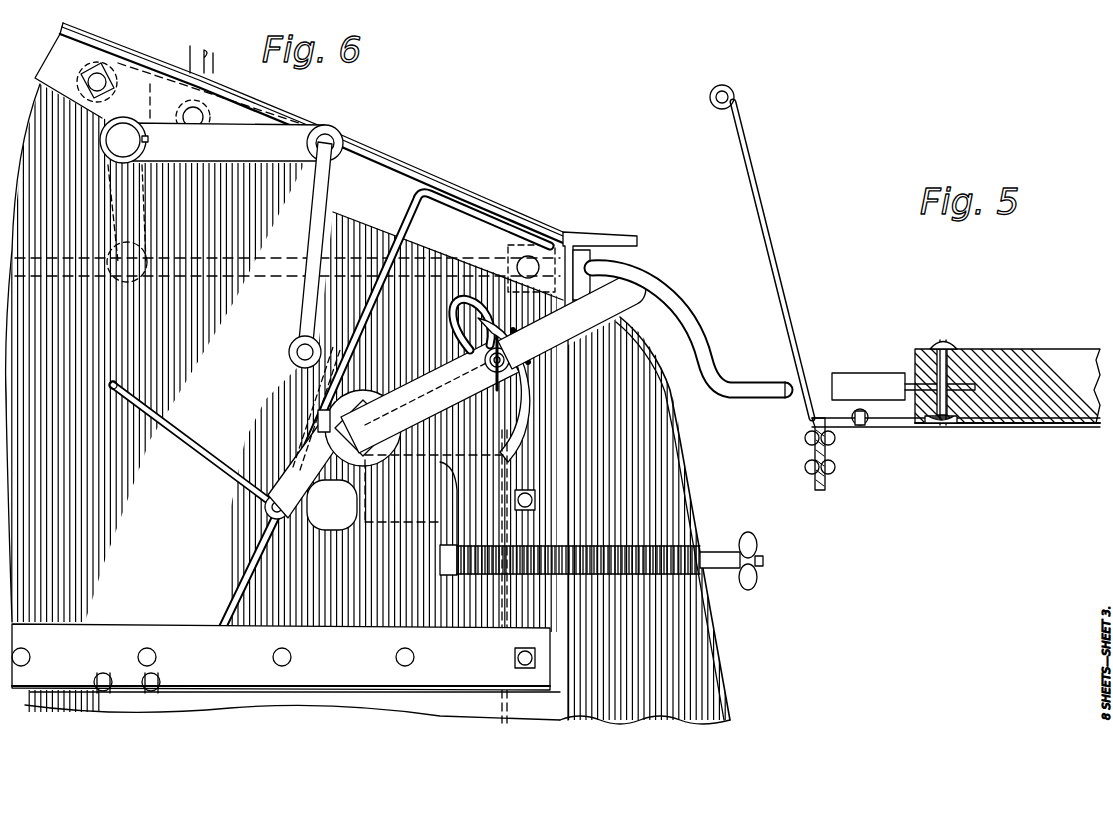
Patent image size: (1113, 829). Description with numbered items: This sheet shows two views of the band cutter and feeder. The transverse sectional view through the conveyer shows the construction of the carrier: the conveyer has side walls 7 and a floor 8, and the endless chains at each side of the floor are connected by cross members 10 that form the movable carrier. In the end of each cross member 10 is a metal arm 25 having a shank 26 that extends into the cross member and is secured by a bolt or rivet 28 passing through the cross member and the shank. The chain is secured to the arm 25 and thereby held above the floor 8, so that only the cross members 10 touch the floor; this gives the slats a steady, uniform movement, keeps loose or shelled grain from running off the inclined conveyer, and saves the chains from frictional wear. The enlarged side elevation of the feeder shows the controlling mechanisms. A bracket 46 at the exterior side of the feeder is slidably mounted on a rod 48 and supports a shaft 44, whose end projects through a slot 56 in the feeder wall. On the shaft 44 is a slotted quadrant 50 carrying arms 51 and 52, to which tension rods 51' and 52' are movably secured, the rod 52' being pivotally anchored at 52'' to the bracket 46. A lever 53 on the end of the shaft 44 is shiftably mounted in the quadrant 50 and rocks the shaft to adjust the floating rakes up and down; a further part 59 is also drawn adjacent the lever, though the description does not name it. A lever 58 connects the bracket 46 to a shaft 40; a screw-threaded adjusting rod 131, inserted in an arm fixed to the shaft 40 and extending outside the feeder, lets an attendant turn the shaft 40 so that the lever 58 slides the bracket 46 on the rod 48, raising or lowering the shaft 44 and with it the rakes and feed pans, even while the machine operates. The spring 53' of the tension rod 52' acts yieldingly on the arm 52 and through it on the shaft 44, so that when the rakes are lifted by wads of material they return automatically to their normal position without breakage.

In FIG. 5, the side wall 7 is at (776, 262).
In FIG. 5, the floor 8 is at (991, 428).
In FIG. 5, the cross member 10 is at (1060, 415).
In FIG. 5, the arm 25 is at (858, 373).
In FIG. 5, the shank 26 is at (920, 385).
In FIG. 5, the bolt or rivet 28 is at (941, 426).
In FIG. 6, the shaft 40 is at (124, 140).
In FIG. 6, the shaft 44 is at (359, 428).
In FIG. 6, the bracket 46 is at (290, 634).
In FIG. 6, the rod 48 is at (410, 220).
In FIG. 6, the slotted quadrant 50 is at (528, 405).
In FIG. 6, the arm 51 is at (310, 432).
In FIG. 6, the tension rod 51' is at (193, 444).
In FIG. 6, the arm 52 is at (436, 576).
In FIG. 6, the tension rod 52' is at (660, 579).
In FIG. 6, the anchorage 52'' is at (410, 591).
In FIG. 6, the lever 53 is at (572, 321).
In FIG. 6, the spring 53' is at (607, 551).
In FIG. 6, the slot 56 is at (311, 505).
In FIG. 6, the lever 58 is at (235, 142).
In FIG. 6, the lever 59 is at (434, 376).
In FIG. 6, the adjusting rod 131 is at (760, 384).